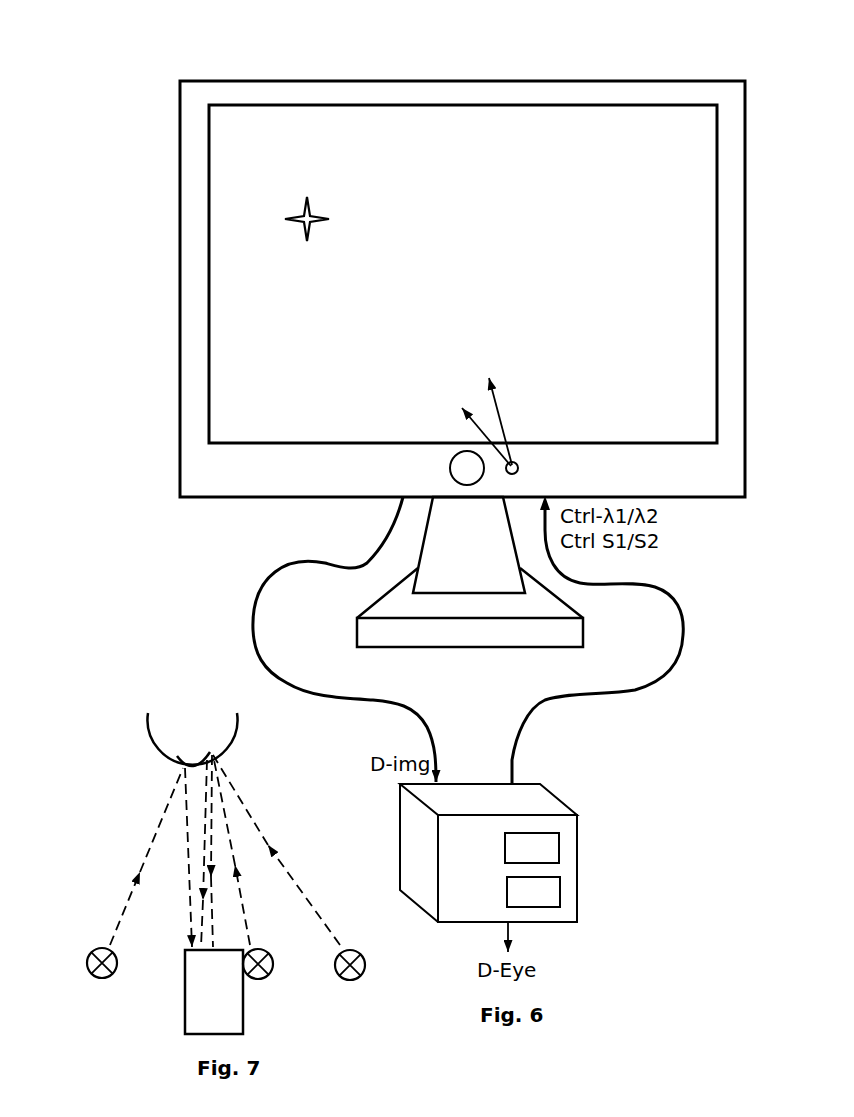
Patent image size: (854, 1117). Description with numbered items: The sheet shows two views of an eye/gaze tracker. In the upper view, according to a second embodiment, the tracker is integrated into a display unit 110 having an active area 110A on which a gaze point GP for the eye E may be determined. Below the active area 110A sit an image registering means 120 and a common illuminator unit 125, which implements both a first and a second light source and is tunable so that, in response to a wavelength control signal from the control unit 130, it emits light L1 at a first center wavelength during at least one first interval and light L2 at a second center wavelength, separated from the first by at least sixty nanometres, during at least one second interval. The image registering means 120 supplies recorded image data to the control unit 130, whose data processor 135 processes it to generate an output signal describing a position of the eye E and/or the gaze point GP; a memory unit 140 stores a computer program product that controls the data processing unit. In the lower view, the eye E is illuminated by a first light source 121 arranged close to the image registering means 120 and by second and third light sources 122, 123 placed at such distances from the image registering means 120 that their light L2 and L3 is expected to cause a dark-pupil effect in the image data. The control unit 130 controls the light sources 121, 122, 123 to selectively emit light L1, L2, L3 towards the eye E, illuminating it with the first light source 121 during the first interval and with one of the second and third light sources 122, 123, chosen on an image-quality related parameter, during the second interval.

In FIG. 6, the display unit 110 is at (260, 515).
In FIG. 6, the active area 110A is at (578, 123).
In FIG. 6, the gaze point GP is at (312, 214).
In FIG. 6, the image registering means 120 is at (450, 467).
In FIG. 7, the image registering means 120 is at (185, 1005).
In FIG. 6, the common illuminator unit 125 is at (520, 468).
In FIG. 6, the control unit 130 is at (533, 802).
In FIG. 6, the memory unit 140 is at (559, 848).
In FIG. 6, the data processor 135 is at (560, 892).
In FIG. 7, the eye E is at (157, 740).
In FIG. 7, the light L1 is at (240, 850).
In FIG. 7, the light L2 is at (146, 856).
In FIG. 7, the light L3 is at (276, 850).
In FIG. 7, the first light source 121 is at (263, 980).
In FIG. 7, the second light source 122 is at (98, 950).
In FIG. 7, the third light source 123 is at (355, 980).